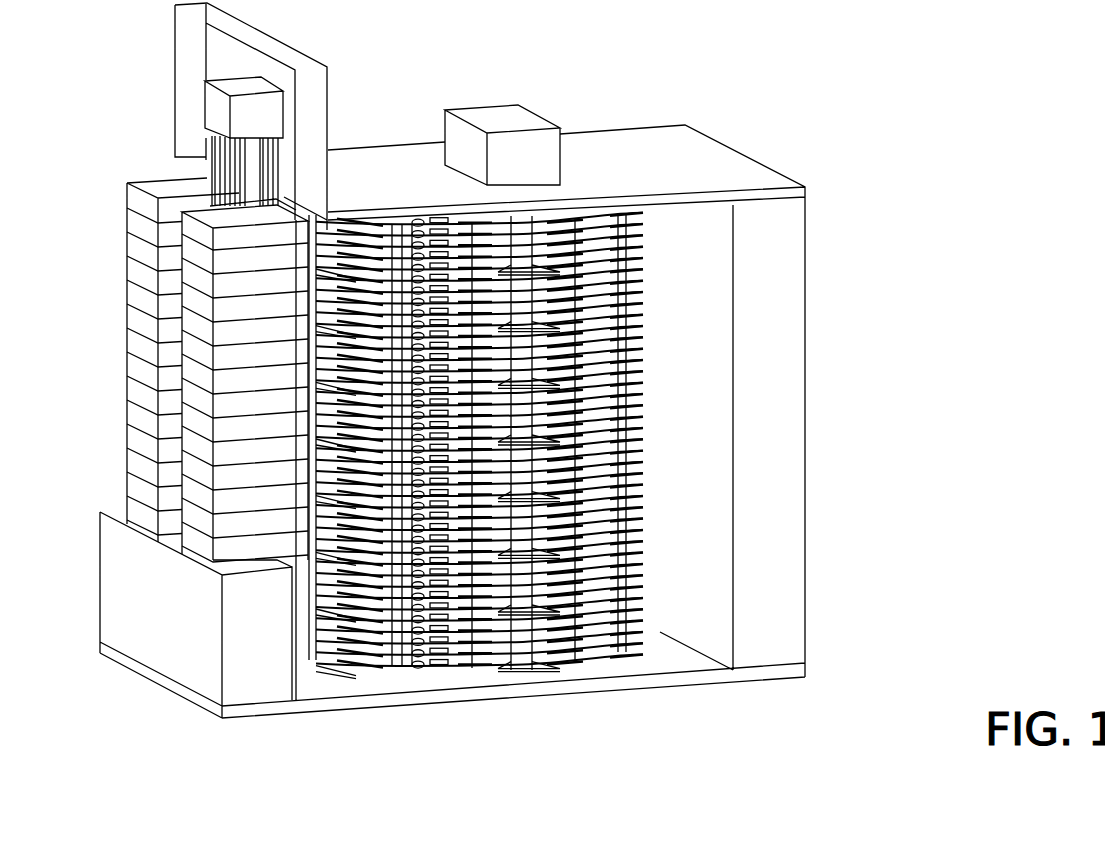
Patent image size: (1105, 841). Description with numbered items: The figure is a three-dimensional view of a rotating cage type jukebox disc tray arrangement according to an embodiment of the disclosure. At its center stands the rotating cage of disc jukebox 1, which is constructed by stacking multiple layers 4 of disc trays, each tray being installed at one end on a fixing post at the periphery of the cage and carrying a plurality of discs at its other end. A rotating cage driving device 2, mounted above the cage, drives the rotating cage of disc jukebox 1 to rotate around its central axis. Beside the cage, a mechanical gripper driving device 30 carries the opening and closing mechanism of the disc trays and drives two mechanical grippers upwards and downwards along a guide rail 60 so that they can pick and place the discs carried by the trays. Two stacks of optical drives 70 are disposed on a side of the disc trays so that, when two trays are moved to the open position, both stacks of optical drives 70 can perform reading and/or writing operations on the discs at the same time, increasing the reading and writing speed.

The rotating cage of disc jukebox 1 is at (543, 673).
The rotating cage driving device 2 is at (483, 106).
The layers of disc trays 4 is at (645, 246).
The mechanical gripper driving device 30 is at (230, 82).
The guide rail 60 is at (212, 179).
The optical drives 70 is at (128, 199).